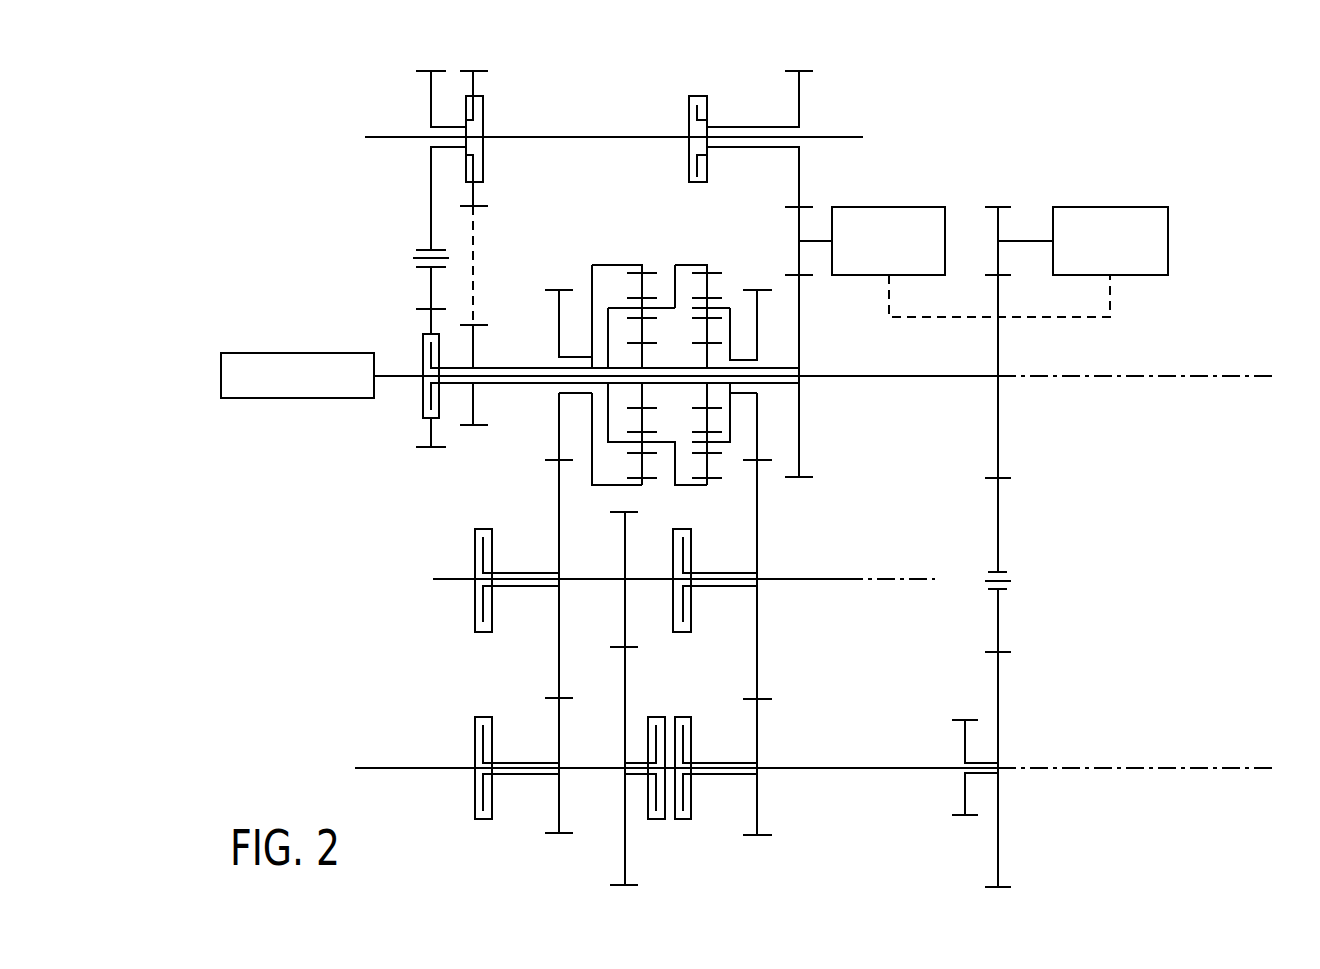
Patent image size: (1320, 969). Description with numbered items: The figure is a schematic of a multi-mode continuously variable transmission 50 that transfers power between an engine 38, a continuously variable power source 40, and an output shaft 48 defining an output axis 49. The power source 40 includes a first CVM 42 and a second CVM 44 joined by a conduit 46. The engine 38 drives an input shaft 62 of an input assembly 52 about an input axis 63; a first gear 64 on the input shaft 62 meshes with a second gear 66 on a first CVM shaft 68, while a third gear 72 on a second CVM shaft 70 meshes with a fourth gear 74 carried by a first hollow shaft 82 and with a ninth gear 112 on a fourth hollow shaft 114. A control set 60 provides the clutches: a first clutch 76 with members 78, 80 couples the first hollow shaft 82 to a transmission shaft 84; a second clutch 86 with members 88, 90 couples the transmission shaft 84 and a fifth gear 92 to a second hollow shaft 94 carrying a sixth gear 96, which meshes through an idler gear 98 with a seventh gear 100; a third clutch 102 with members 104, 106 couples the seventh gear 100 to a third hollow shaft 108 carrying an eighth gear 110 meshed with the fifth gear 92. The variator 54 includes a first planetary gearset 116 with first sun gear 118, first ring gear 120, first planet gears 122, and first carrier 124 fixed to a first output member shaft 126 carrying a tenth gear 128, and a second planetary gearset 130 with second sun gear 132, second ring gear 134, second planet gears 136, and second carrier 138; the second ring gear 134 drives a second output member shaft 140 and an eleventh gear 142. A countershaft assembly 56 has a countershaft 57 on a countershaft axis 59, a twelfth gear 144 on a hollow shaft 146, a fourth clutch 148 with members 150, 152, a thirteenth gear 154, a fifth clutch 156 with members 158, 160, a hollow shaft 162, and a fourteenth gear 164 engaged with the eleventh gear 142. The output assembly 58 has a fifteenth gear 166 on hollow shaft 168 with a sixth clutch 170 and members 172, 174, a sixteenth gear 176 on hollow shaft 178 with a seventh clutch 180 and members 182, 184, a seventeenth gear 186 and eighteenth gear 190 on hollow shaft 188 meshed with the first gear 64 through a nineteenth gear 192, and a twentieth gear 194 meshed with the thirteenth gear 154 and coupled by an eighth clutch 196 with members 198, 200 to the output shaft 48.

The engine 38 is at (221, 372).
The continuously variable power source 40 is at (972, 182).
The first CVM 42 is at (1168, 242).
The second CVM 44 is at (907, 207).
The conduit 46 is at (1058, 317).
The output shaft 48 is at (1050, 768).
The output axis 49 is at (1195, 770).
The transmission 50 is at (330, 505).
The input assembly 52 is at (825, 118).
The variator 54 is at (815, 433).
The countershaft assembly 56 is at (785, 645).
The output assembly 58 is at (800, 803).
The countershaft 57 is at (570, 579).
The countershaft axis 59 is at (880, 579).
The control set 60 is at (540, 113).
The input shaft 62 is at (890, 376).
The input axis 63 is at (1170, 378).
The first gear 64 is at (998, 448).
The second gear 66 is at (995, 218).
The first CVM shaft 68 is at (1028, 241).
The second CVM shaft 70 is at (815, 243).
The third gear 72 is at (801, 222).
The fourth gear 74 is at (798, 170).
The first clutch 76 is at (685, 103).
The first member 78 is at (700, 112).
The second member 80 is at (689, 120).
The first hollow shaft 82 is at (757, 127).
The transmission shaft 84 is at (583, 140).
The second clutch 86 is at (487, 103).
The first member 88 is at (483, 157).
The second member 90 is at (466, 105).
The fifth gear 92 is at (473, 193).
The second hollow shaft 94 is at (450, 127).
The sixth gear 96 is at (431, 178).
The idler gear 98 is at (412, 248).
The seventh gear 100 is at (430, 322).
The third clutch 102 is at (410, 398).
The first member 104 is at (423, 360).
The second member 106 is at (423, 404).
The third hollow shaft 108 is at (492, 383).
The eighth gear 110 is at (476, 428).
The ninth gear 112 is at (800, 308).
The fourth hollow shaft 114 is at (777, 368).
The first planetary gearset 116 is at (708, 255).
The first sun gear 118 is at (707, 392).
The first ring gear 120 is at (713, 272).
The first planet gears 122 is at (707, 327).
The first carrier 124 is at (724, 298).
The first output member shaft 126 is at (743, 395).
The tenth gear 128 is at (760, 413).
The second planetary gearset 130 is at (600, 258).
The second sun gear 132 is at (640, 357).
The second ring gear 134 is at (650, 270).
The second planet gears 136 is at (640, 330).
The second carrier 138 is at (612, 306).
The second output member shaft 140 is at (570, 395).
The eleventh gear 142 is at (550, 445).
The twelfth gear 144 is at (760, 500).
The hollow shaft 146 is at (757, 573).
The fourth clutch 148 is at (683, 647).
The first member 150 is at (685, 605).
The second member 152 is at (673, 567).
The thirteenth gear 154 is at (625, 597).
The fifth clutch 156 is at (470, 530).
The first member 158 is at (483, 632).
The second member 160 is at (483, 608).
The hollow shaft 162 is at (525, 573).
The fourteenth gear 164 is at (559, 658).
The fifteenth gear 166 is at (758, 737).
The hollow shaft 168 is at (727, 763).
The sixth clutch 170 is at (687, 838).
The first member 172 is at (691, 792).
The second member 174 is at (688, 826).
The sixteenth gear 176 is at (559, 715).
The hollow shaft 178 is at (530, 774).
The seventh clutch 180 is at (480, 845).
The first member 182 is at (483, 798).
The second member 184 is at (483, 822).
The seventeenth gear 186 is at (1000, 683).
The hollow shaft 188 is at (980, 762).
The eighteenth gear 190 is at (967, 802).
The nineteenth gear 192 is at (1018, 580).
The twentieth gear 194 is at (625, 848).
The eighth clutch 196 is at (657, 825).
The first member 198 is at (648, 740).
The second member 200 is at (660, 717).